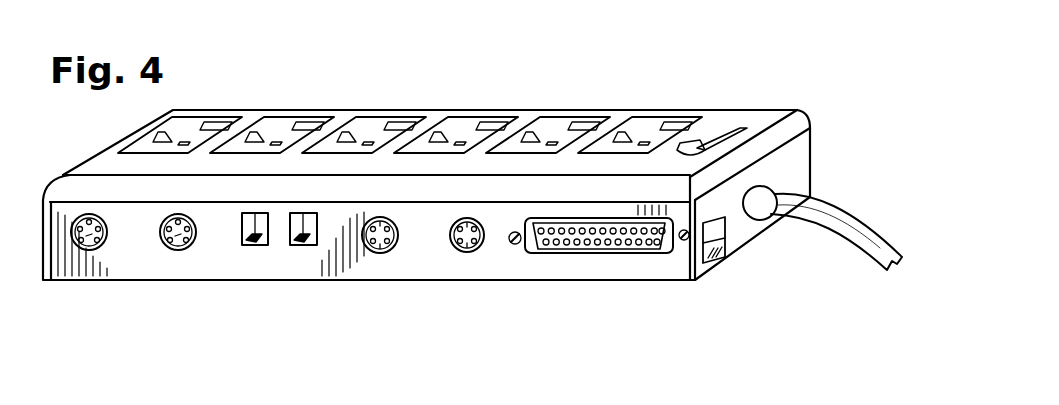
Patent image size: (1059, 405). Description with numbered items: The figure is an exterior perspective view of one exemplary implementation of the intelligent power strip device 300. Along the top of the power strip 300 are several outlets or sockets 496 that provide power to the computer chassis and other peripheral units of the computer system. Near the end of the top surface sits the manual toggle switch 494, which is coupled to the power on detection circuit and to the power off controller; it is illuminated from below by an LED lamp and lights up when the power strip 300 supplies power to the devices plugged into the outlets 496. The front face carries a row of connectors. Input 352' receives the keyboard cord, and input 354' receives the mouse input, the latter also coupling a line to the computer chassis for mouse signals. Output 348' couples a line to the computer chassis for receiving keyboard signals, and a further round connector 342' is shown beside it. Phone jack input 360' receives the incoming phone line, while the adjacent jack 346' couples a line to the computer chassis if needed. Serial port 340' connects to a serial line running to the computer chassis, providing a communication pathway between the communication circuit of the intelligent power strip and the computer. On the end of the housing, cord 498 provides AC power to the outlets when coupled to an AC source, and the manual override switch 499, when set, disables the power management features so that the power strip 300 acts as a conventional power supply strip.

The intelligent power strip device 300 is at (520, 118).
The manual toggle switch 494 is at (708, 140).
The outlets 496 is at (375, 128).
The cord 498 is at (853, 243).
The manual override switch 499 is at (717, 262).
The serial port 340' is at (599, 272).
The keyboard connector 342' is at (191, 266).
The jack 346' is at (237, 283).
The output 348' is at (108, 270).
The input 352' is at (398, 267).
The input 354' is at (486, 268).
The phone jack input 360' is at (286, 268).